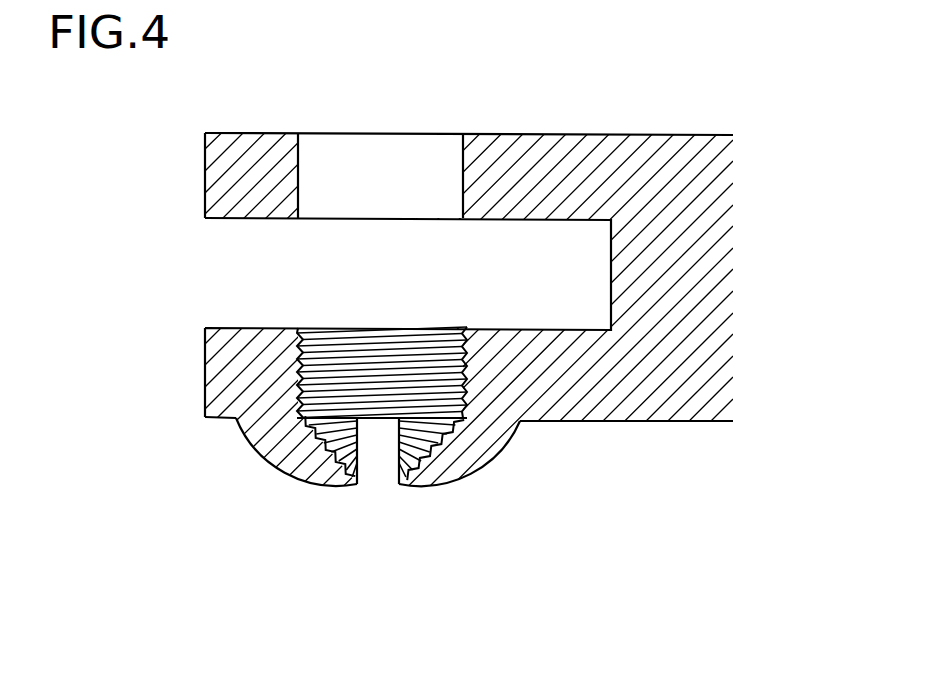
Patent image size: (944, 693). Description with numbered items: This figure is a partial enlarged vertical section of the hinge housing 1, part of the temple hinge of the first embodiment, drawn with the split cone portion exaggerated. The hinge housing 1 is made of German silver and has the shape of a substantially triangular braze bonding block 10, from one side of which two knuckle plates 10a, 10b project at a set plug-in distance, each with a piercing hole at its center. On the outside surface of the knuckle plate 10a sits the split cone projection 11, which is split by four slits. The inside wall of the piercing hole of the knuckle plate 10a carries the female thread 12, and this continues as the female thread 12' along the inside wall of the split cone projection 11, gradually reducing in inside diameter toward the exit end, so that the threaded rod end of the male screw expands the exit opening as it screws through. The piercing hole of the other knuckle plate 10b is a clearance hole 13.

The hinge housing 1 is at (632, 428).
The braze bonding block 10 is at (723, 193).
The knuckle plate 10a is at (224, 419).
The knuckle plate 10b is at (205, 193).
The split cone projection 11 is at (268, 460).
The female thread 12 is at (382, 381).
The female thread 12' is at (378, 481).
The clearance hole 13 is at (300, 157).